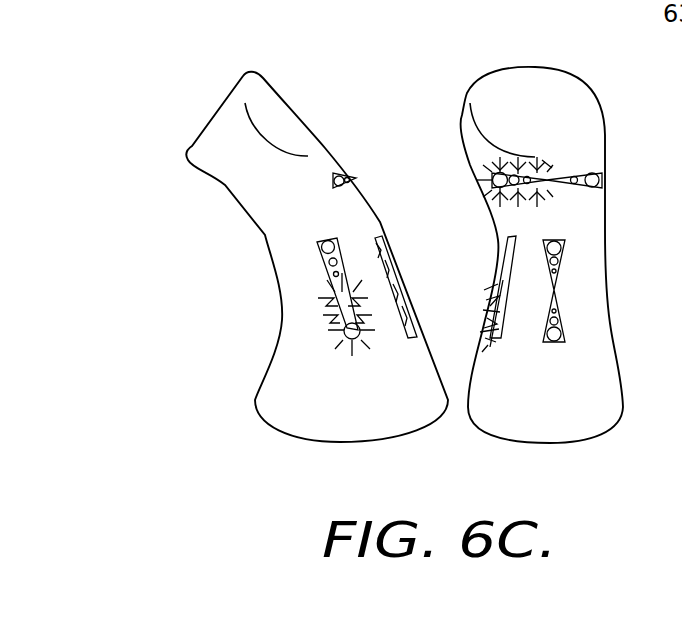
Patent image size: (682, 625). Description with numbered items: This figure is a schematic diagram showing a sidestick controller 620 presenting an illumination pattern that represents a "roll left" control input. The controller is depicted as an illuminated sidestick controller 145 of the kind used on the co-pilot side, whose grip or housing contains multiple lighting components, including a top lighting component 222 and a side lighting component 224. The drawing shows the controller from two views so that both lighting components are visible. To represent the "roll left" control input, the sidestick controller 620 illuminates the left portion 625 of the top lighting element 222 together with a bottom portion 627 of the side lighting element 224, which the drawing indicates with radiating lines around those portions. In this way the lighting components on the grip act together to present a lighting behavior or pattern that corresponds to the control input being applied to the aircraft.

The sidestick controller 620 is at (155, 73).
The co-pilot side illuminated sidestick controller 145 is at (470, 103).
The top lighting component 222 is at (354, 178).
The side lighting component 224 is at (318, 244).
The left portion 625 is at (505, 255).
The bottom portion 627 is at (343, 342).